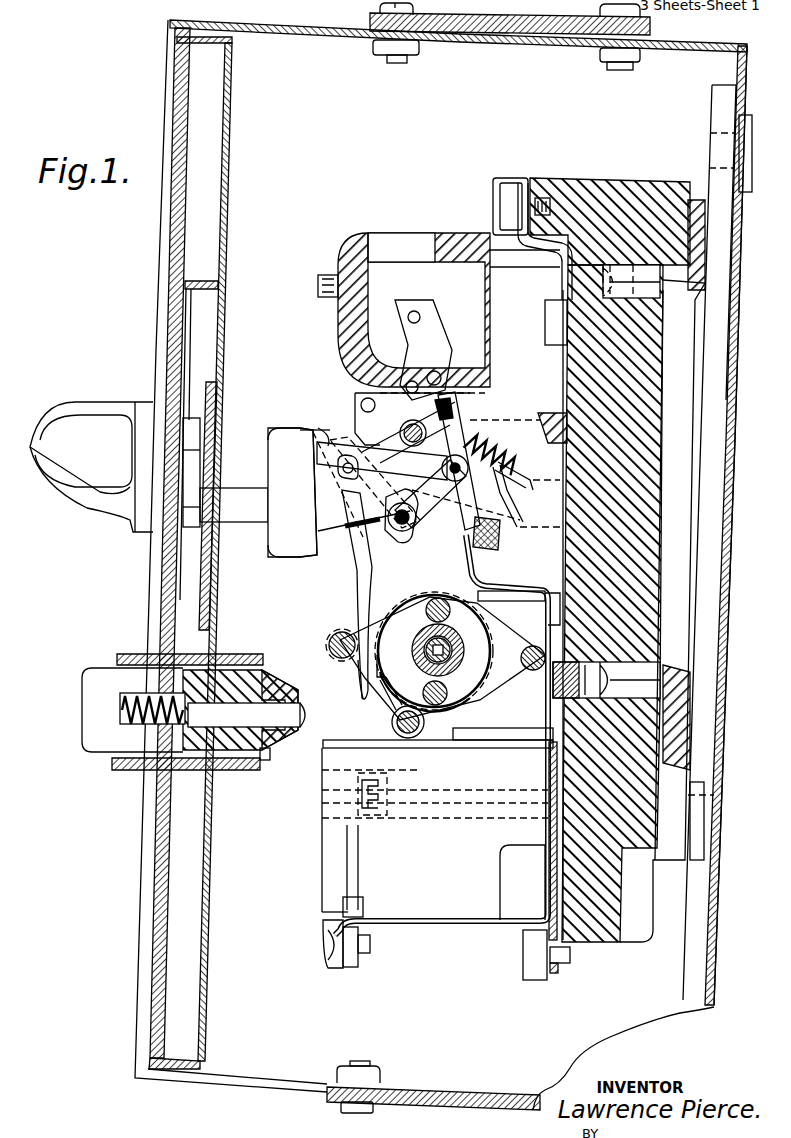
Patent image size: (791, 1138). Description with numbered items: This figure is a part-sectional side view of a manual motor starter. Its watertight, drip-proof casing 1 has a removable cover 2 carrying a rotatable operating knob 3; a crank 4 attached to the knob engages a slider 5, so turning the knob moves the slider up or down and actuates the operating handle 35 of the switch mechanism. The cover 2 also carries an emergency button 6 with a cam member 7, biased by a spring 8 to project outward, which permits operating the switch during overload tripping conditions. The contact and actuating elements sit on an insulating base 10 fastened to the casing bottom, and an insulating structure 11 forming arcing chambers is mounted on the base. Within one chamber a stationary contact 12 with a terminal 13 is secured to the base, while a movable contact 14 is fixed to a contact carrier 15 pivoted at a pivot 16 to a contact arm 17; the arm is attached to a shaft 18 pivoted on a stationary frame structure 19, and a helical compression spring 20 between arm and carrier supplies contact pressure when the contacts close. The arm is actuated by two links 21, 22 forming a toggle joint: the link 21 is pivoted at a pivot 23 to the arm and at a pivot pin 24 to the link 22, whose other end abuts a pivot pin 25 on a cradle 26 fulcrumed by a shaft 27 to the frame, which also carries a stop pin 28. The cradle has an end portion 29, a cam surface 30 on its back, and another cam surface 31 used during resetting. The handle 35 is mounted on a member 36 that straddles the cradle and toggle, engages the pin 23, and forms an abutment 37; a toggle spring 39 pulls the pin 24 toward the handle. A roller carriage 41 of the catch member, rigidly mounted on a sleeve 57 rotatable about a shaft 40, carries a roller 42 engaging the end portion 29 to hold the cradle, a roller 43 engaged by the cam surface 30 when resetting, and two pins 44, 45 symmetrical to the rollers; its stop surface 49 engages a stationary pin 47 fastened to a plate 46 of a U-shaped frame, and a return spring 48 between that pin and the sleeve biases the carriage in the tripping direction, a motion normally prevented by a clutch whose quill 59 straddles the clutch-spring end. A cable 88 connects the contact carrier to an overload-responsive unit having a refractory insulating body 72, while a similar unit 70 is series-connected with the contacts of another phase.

The casing 1 is at (728, 527).
The removable cover 2 is at (140, 940).
The operating knob 3 is at (115, 497).
The crank 4 is at (195, 460).
The slider 5 is at (207, 395).
The emergency button 6 is at (118, 745).
The cam member 7 is at (272, 672).
The spring 8 is at (125, 693).
The insulating base 10 is at (622, 181).
The insulating structure 11 is at (456, 233).
The stationary contact 12 is at (556, 335).
The terminal 13 is at (505, 188).
The movable contact 14 is at (440, 322).
The contact carrier 15 is at (440, 360).
The pivot 16 is at (445, 383).
The contact arm 17 is at (510, 490).
The shaft 18 is at (500, 548).
The frame structure 19 is at (352, 418).
The helical compression spring 20 is at (505, 450).
The link 21 is at (425, 513).
The link 22 is at (320, 455).
The pivot 23 is at (488, 420).
The pivot pin 24 is at (403, 531).
The pivot pin 25 is at (338, 468).
The cradle 26 is at (355, 590).
The shaft 27 is at (399, 434).
The stop pin 28 is at (360, 402).
The end portion 29 is at (362, 682).
The cam surface 30 is at (400, 612).
The cam surface 31 is at (335, 440).
The operating handle 35 is at (237, 520).
The member 36 is at (345, 530).
The abutment 37 is at (310, 428).
The toggle spring 39 is at (360, 530).
The shaft 40 is at (462, 650).
The roller carriage 41 is at (505, 672).
The roller 42 is at (330, 638).
The roller 43 is at (440, 598).
The pin 44 is at (535, 670).
The pin 45 is at (465, 702).
The plate 46 is at (527, 738).
The stationary pin 47 is at (424, 722).
The return spring 48 is at (511, 596).
The stop surface 49 is at (380, 665).
The sleeve 57 is at (450, 662).
The quill 59 is at (455, 637).
The unit 70 is at (310, 861).
The insulating body 72 is at (378, 762).
The cable 88 is at (538, 606).